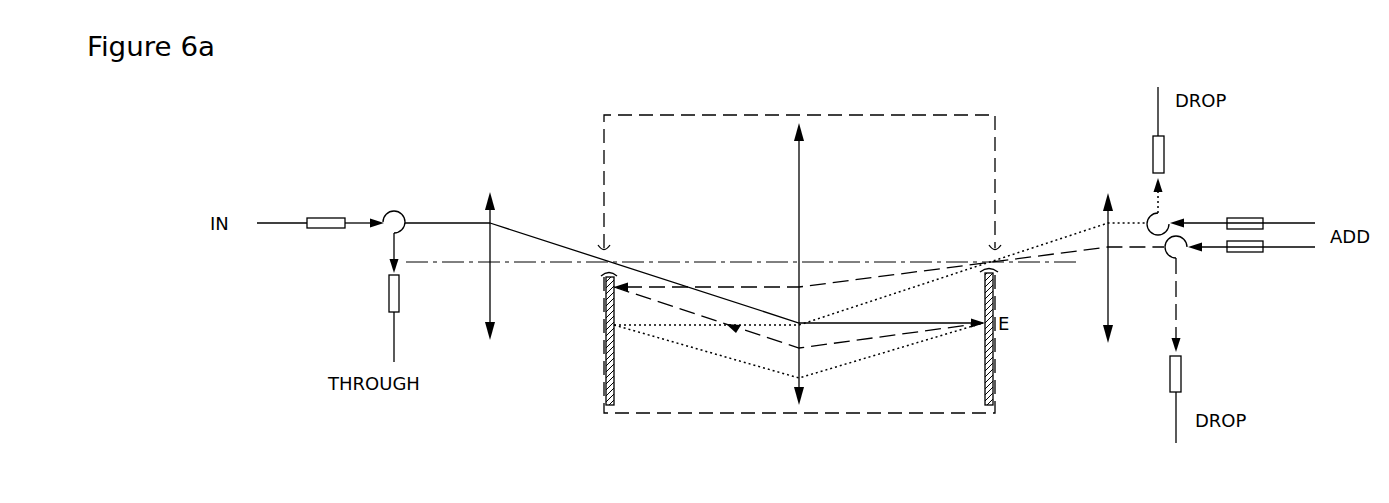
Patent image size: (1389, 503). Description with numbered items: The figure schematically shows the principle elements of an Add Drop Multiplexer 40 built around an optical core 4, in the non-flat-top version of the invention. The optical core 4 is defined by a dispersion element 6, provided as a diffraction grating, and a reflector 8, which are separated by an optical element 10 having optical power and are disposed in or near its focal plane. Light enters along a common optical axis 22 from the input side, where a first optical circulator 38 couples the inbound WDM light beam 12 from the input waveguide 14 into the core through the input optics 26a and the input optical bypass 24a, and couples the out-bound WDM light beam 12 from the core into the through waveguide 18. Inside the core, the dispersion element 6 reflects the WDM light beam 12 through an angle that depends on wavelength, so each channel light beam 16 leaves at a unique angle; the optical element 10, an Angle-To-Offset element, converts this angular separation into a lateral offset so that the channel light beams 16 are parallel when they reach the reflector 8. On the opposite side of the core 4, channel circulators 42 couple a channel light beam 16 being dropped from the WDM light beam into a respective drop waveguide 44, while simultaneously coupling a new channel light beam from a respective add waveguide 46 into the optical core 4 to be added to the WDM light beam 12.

The optical core 4 is at (602, 130).
The dispersion element 6 is at (994, 350).
The reflector 8 is at (604, 386).
The optical element 10 is at (796, 168).
The WDM light beam 12 is at (466, 222).
The input waveguide 14 is at (292, 222).
The channel light beam 16 is at (862, 340).
The through waveguide 18 is at (392, 335).
The optical axis 22 is at (1043, 263).
The input optical bypass 24a is at (603, 247).
The optics 26a is at (487, 285).
The first optical circulator 38 is at (386, 211).
The Add Drop Multiplexer 40 is at (1016, 68).
The channel circulator 42 is at (1148, 214).
The drop waveguide 44 is at (1157, 112).
The add waveguide 46 is at (1290, 222).